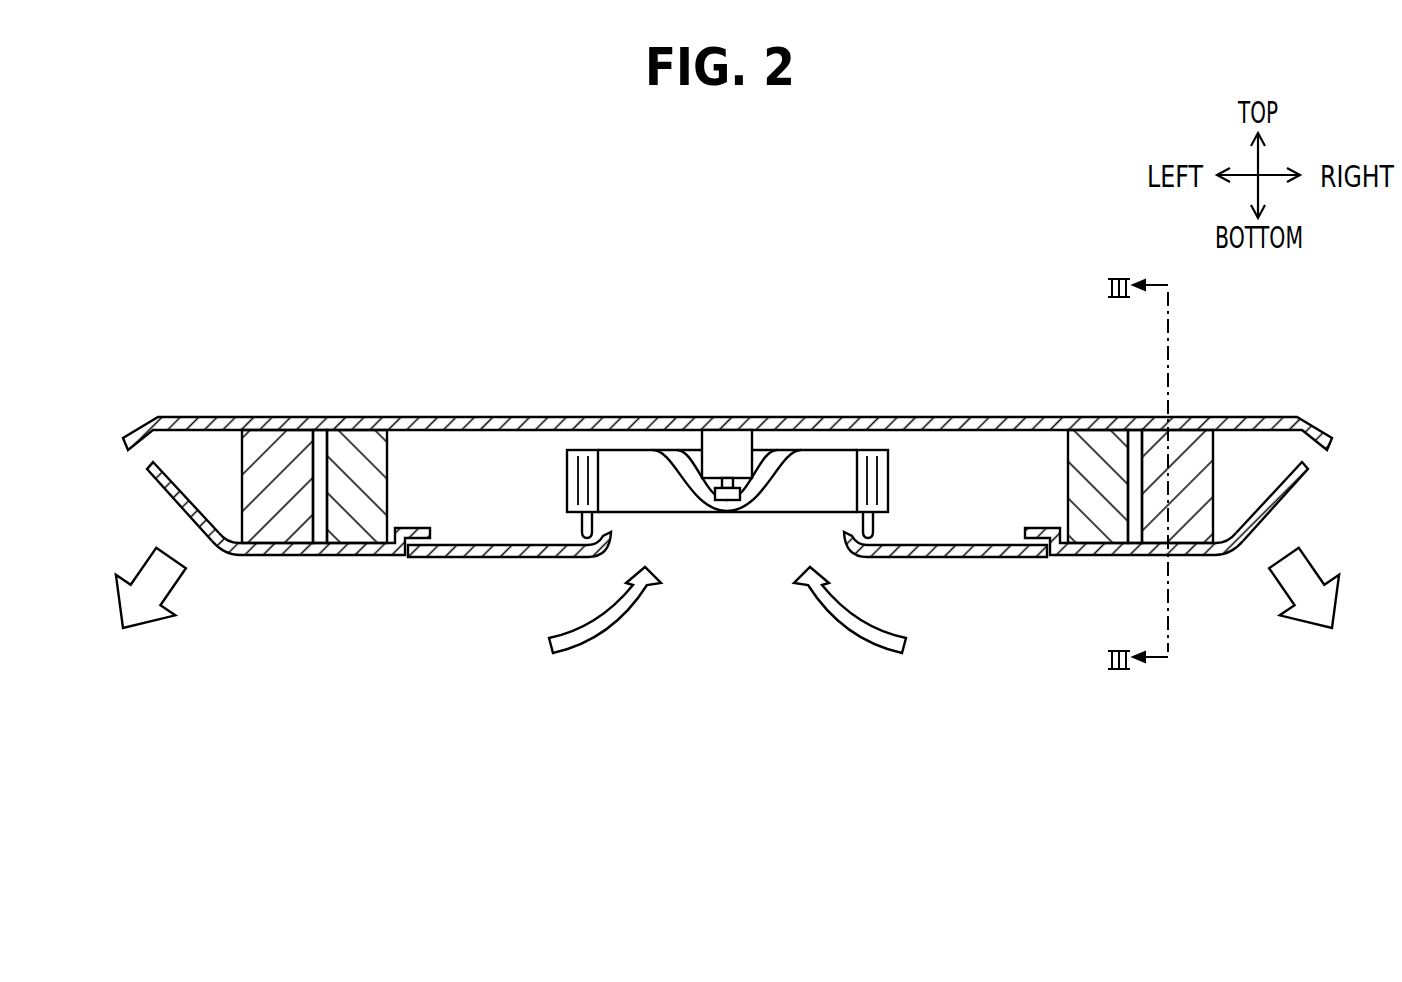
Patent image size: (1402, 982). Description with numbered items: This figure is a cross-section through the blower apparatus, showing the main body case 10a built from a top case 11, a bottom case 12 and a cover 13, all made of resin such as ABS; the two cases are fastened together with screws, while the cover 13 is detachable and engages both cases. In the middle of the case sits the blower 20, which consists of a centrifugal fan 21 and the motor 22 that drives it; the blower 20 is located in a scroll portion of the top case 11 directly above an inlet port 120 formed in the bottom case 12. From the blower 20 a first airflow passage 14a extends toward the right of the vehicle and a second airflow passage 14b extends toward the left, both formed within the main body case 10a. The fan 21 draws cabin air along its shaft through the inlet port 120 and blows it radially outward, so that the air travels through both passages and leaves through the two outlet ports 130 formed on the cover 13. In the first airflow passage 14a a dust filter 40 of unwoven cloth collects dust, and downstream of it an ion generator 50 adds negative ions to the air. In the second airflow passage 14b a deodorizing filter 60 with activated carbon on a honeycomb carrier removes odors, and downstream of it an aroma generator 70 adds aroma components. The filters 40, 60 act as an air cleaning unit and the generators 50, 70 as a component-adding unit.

The main body case 10a is at (906, 375).
The top case 11 is at (533, 419).
The bottom case 12 is at (488, 559).
The cover 13 is at (317, 557).
The first airflow passage 14a is at (983, 458).
The second airflow passage 14b is at (420, 458).
The blower 20 is at (727, 415).
The fan 21 is at (592, 453).
The motor 22 is at (726, 418).
The dust filter 40 is at (1097, 429).
The ion generator 50 is at (1203, 429).
The deodorizing filter 60 is at (362, 533).
The aroma generator 70 is at (272, 530).
The inlet port 120 is at (772, 540).
The outlet ports 130 is at (159, 487).